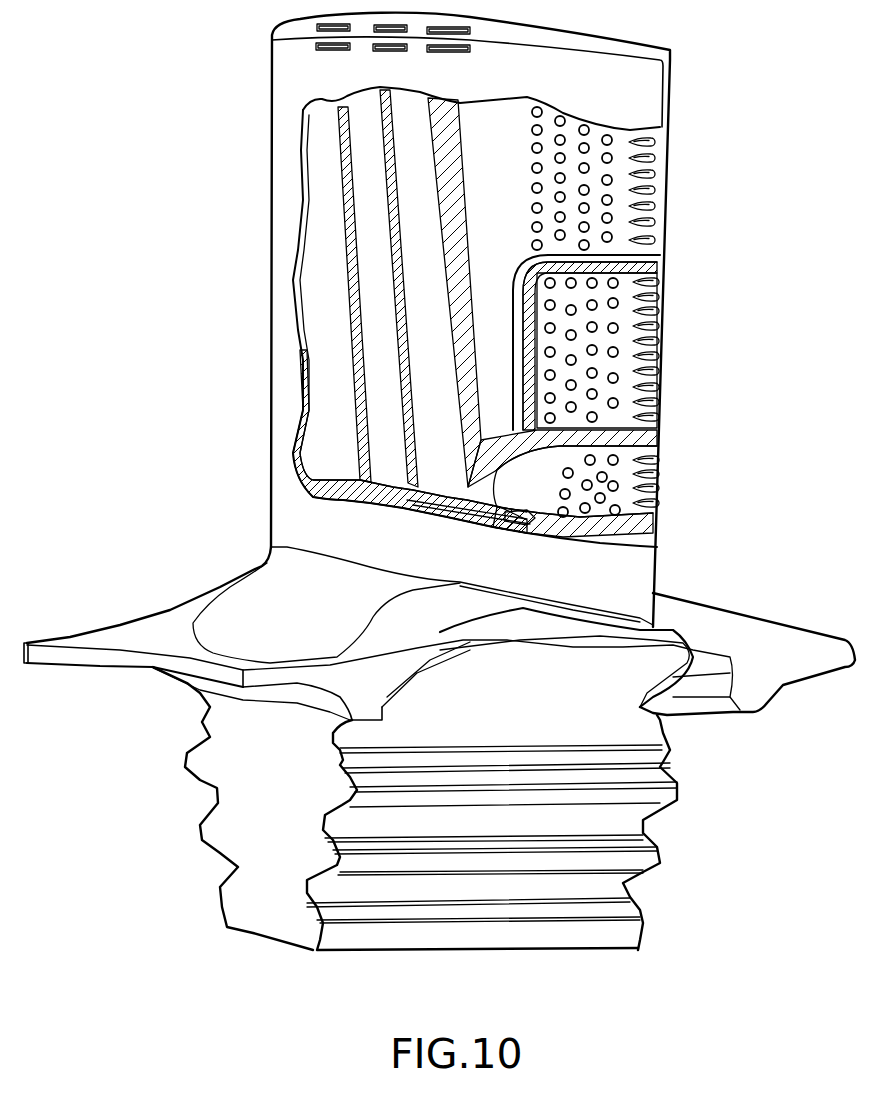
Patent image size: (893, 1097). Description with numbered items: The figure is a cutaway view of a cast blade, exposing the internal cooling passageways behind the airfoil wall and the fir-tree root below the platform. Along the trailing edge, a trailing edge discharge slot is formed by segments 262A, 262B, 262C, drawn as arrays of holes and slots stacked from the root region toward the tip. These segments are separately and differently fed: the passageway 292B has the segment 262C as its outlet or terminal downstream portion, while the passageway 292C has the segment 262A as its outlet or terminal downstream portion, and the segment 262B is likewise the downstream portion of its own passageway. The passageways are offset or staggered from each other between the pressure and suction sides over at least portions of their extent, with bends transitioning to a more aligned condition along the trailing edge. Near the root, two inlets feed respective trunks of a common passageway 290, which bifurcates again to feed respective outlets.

The trailing edge discharge slot segment 262A is at (623, 458).
The trailing edge discharge slot segment 262B is at (620, 365).
The trailing edge discharge slot segment 262C is at (627, 197).
The passageway 292B is at (493, 380).
The passageway 292C is at (540, 495).
The common passageway 290 is at (540, 518).